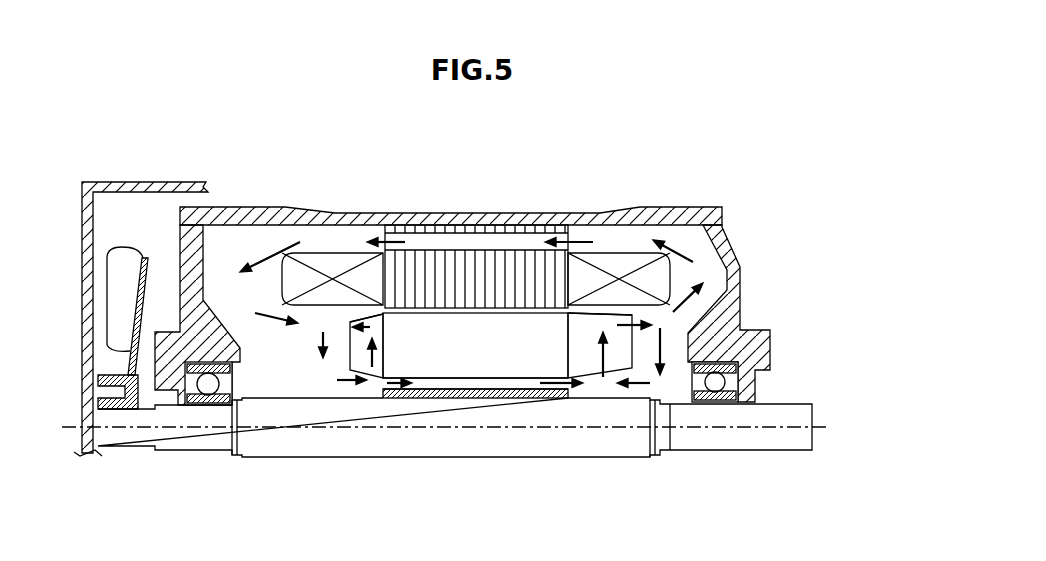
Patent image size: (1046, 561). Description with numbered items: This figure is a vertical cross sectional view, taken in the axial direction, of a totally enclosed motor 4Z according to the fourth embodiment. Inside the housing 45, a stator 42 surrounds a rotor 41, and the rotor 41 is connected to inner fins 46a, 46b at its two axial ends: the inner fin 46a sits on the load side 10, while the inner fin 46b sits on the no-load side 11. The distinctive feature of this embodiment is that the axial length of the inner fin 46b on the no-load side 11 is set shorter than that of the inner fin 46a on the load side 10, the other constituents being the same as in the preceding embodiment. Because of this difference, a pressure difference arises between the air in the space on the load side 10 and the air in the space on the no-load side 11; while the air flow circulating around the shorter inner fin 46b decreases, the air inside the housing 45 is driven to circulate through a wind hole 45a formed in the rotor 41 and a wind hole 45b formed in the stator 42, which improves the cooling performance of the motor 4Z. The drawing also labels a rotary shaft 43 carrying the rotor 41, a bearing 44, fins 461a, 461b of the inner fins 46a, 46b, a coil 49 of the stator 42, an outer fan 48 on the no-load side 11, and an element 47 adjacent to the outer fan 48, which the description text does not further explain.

The totally enclosed motor 4Z is at (793, 217).
The load side 10 is at (698, 253).
The no-load side 11 is at (227, 258).
The rotor 41 is at (523, 352).
The stator 42 is at (474, 222).
The Rotary shaft 43 is at (771, 440).
The Bearing 44 is at (714, 383).
The housing 45 is at (733, 249).
The wind hole 45a is at (450, 383).
The wind hole 45b is at (537, 242).
The inner fin 46a is at (605, 380).
The inner fin 46b is at (363, 387).
The Fin 461a is at (622, 342).
The Fin 461b is at (357, 360).
The Fan cover 47 is at (171, 182).
The Outer fan 48 is at (125, 270).
The Coil 49 is at (368, 278).